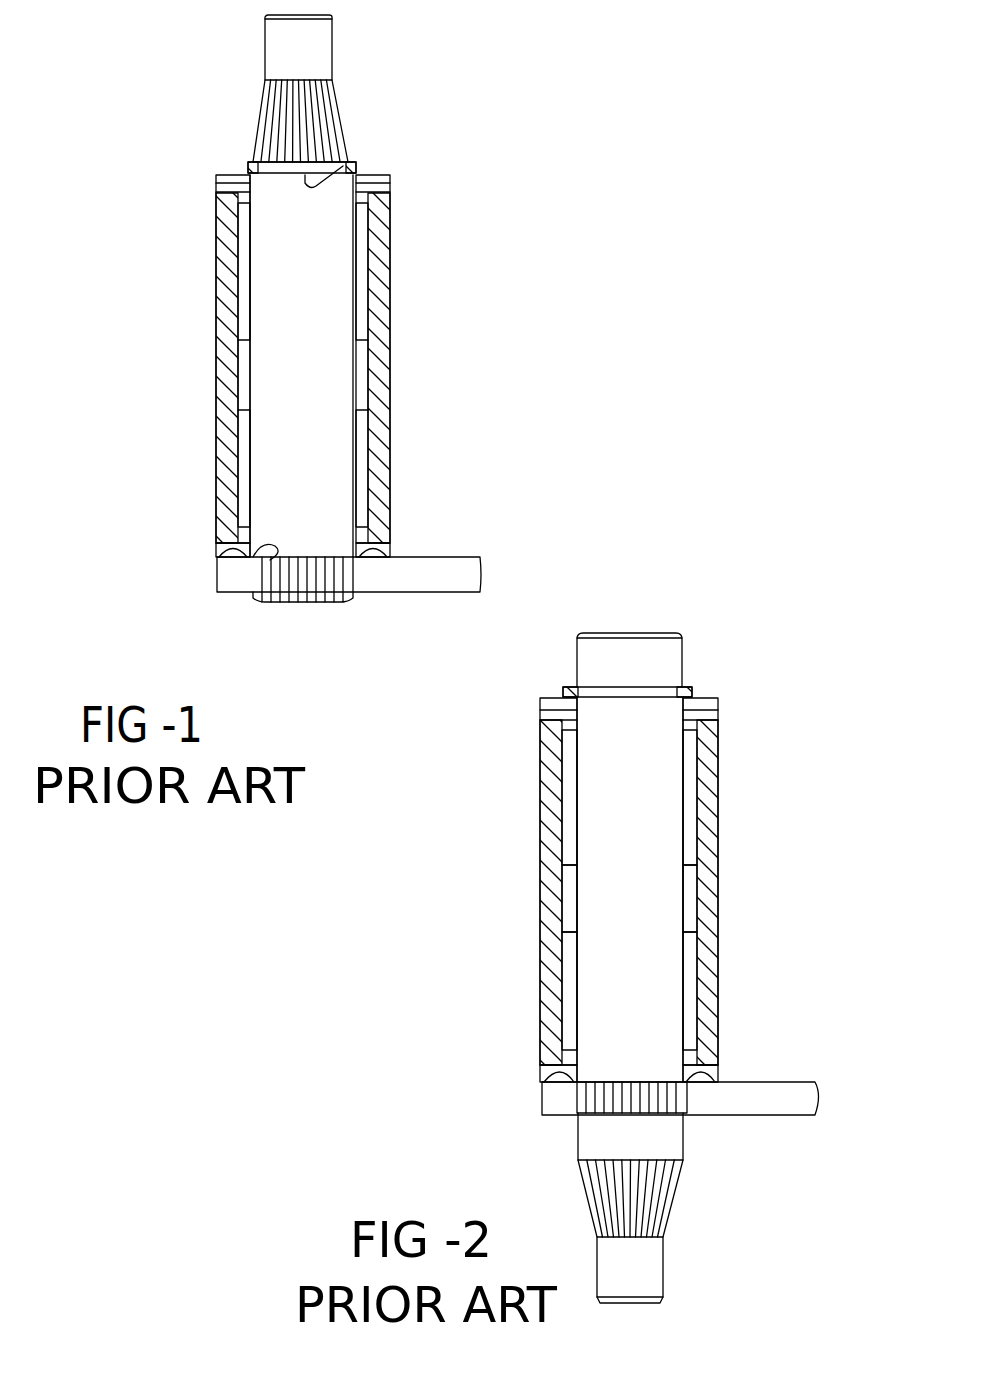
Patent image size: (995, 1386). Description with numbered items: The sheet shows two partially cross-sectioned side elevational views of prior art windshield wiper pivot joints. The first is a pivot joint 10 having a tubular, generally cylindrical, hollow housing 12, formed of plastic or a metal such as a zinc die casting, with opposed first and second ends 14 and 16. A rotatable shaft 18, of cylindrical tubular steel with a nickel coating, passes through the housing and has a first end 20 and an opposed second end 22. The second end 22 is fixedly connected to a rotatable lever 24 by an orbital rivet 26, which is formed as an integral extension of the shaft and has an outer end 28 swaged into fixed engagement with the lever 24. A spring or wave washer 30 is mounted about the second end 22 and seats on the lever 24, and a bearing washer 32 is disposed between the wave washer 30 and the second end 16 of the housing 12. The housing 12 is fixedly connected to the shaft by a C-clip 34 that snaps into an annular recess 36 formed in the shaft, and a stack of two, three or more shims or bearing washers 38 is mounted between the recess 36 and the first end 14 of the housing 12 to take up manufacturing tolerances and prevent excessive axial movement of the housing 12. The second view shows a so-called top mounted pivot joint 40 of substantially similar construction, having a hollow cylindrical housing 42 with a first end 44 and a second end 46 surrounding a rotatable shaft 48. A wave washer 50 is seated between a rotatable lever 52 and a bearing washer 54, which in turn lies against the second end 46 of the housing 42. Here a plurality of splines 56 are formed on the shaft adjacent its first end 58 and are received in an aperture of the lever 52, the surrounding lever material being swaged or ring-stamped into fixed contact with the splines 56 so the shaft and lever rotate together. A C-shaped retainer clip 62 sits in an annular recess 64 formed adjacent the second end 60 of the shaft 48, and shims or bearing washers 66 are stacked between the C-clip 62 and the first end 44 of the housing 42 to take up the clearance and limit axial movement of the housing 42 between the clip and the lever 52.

In FIG. 1, the pivot joint 10 is at (188, 323).
In FIG. 1, the housing 12 is at (216, 365).
In FIG. 1, the first end 14 is at (226, 222).
In FIG. 1, the second end 16 is at (224, 543).
In FIG. 1, the rotatable shaft 18 is at (342, 280).
In FIG. 1, the first end 20 is at (334, 17).
In FIG. 1, the second end 22 is at (255, 556).
In FIG. 1, the rotatable lever 24 is at (390, 588).
In FIG. 1, the orbital rivet 26 is at (278, 582).
In FIG. 1, the outer end 28 is at (305, 605).
In FIG. 1, the wave washer 30 is at (392, 553).
In FIG. 1, the bearing washer 32 is at (385, 525).
In FIG. 1, the C-clip 34 is at (244, 166).
In FIG. 1, the annular recess 36 is at (322, 182).
In FIG. 1, the bearing washers 38 is at (393, 186).
In FIG. 2, the pivot joint 40 is at (500, 888).
In FIG. 2, the housing 42 is at (707, 893).
In FIG. 2, the first end 44 is at (719, 725).
In FIG. 2, the second end 46 is at (707, 1060).
In FIG. 2, the rotatable shaft 48 is at (672, 815).
In FIG. 2, the wave washer 50 is at (540, 1075).
In FIG. 2, the rotatable lever 52 is at (752, 1100).
In FIG. 2, the bearing washer 54 is at (722, 1075).
In FIG. 2, the splines 56 is at (600, 1108).
In FIG. 2, the first end 58 is at (665, 1271).
In FIG. 2, the second end 60 is at (665, 655).
In FIG. 2, the C-shaped retainer clip 62 is at (693, 692).
In FIG. 2, the annular recess 64 is at (608, 698).
In FIG. 2, the bearing washers 66 is at (537, 712).